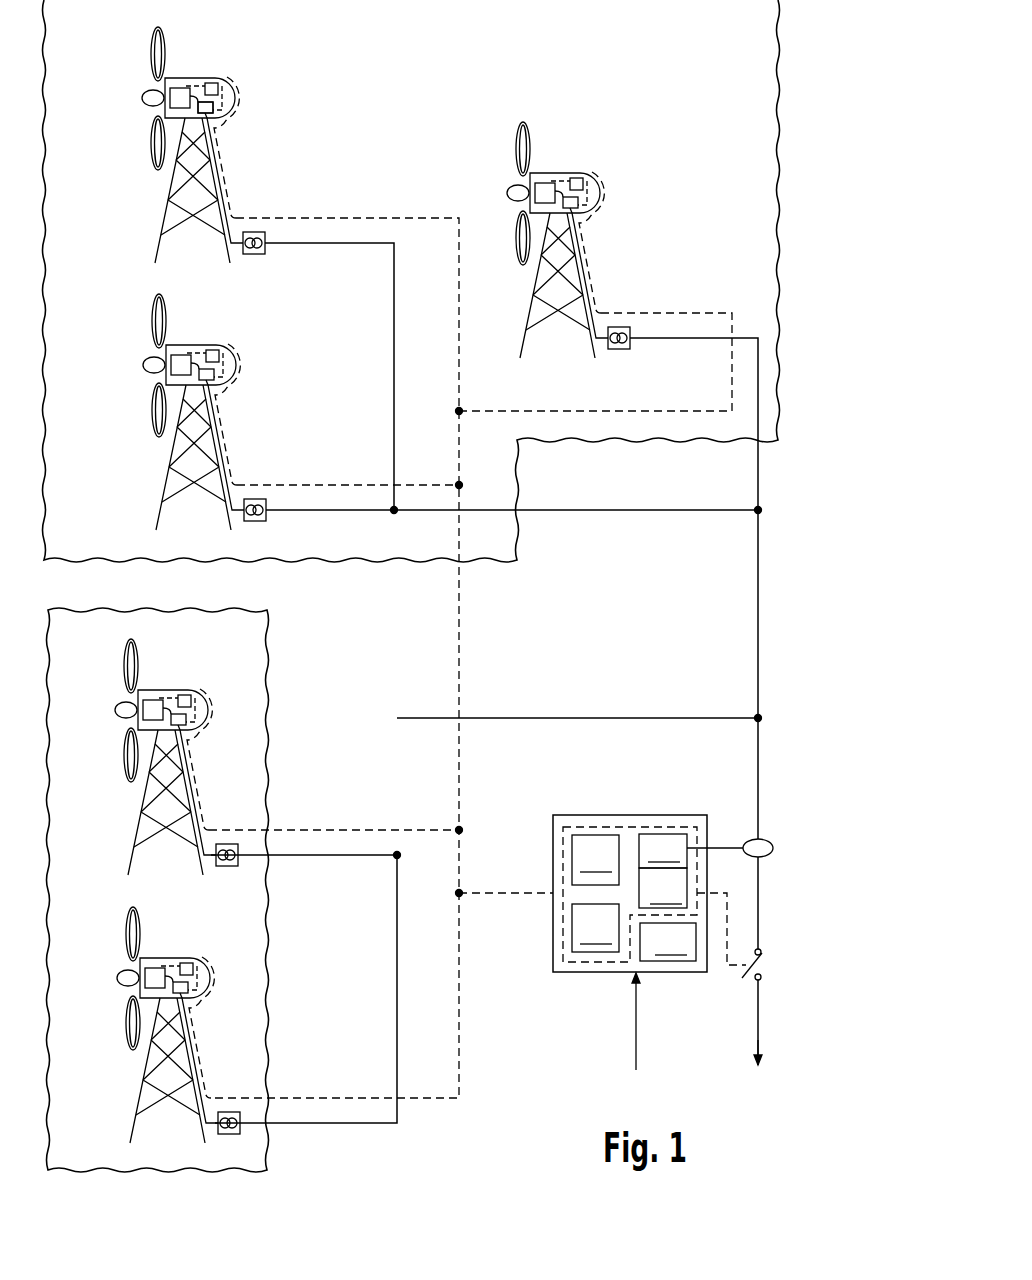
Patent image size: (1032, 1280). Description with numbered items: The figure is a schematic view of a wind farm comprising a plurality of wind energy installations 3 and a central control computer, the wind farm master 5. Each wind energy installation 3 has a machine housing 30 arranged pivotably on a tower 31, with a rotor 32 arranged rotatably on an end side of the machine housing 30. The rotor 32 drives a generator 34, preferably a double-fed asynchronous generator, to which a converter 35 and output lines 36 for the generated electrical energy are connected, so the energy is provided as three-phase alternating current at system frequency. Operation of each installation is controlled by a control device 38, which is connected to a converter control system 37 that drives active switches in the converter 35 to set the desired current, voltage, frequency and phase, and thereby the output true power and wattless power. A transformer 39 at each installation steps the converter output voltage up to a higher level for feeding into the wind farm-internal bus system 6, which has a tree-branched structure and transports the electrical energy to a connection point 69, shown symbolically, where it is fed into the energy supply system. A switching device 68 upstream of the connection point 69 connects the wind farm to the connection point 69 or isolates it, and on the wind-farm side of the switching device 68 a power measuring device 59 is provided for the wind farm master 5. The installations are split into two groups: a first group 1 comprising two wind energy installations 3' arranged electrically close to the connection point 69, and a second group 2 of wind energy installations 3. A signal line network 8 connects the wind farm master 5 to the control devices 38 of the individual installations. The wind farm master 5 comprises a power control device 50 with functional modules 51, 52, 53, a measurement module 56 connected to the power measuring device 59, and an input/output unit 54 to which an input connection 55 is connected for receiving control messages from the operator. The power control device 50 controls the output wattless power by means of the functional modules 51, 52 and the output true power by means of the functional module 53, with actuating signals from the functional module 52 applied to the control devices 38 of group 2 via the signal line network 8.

The first group 1 is at (268, 648).
The group 2 is at (779, 22).
The wind energy installation 3 is at (439, 319).
The wind energy installation 3' is at (179, 880).
The wind farm master 5 is at (630, 891).
The wind farm-internal bus system 6 is at (642, 510).
The signal line network 8 is at (462, 648).
The machine housing 30 is at (197, 78).
The tower 31 is at (162, 221).
The rotor 32 is at (152, 61).
The generator 34 is at (176, 88).
The converter 35 is at (211, 119).
The converter control system 37 is at (211, 119).
The output lines 36 is at (220, 178).
The control device 38 is at (222, 80).
The transformer 39 is at (254, 255).
The power control device 50 is at (622, 823).
The functional module 51 is at (595, 928).
The functional module 52 is at (595, 860).
The functional module 53 is at (663, 888).
The input/output unit 54 is at (668, 942).
The input connection 55 is at (637, 1043).
The measurement module 56 is at (663, 851).
The power measuring device 59 is at (773, 840).
The switching device 68 is at (763, 967).
The connection point 69 is at (762, 1068).